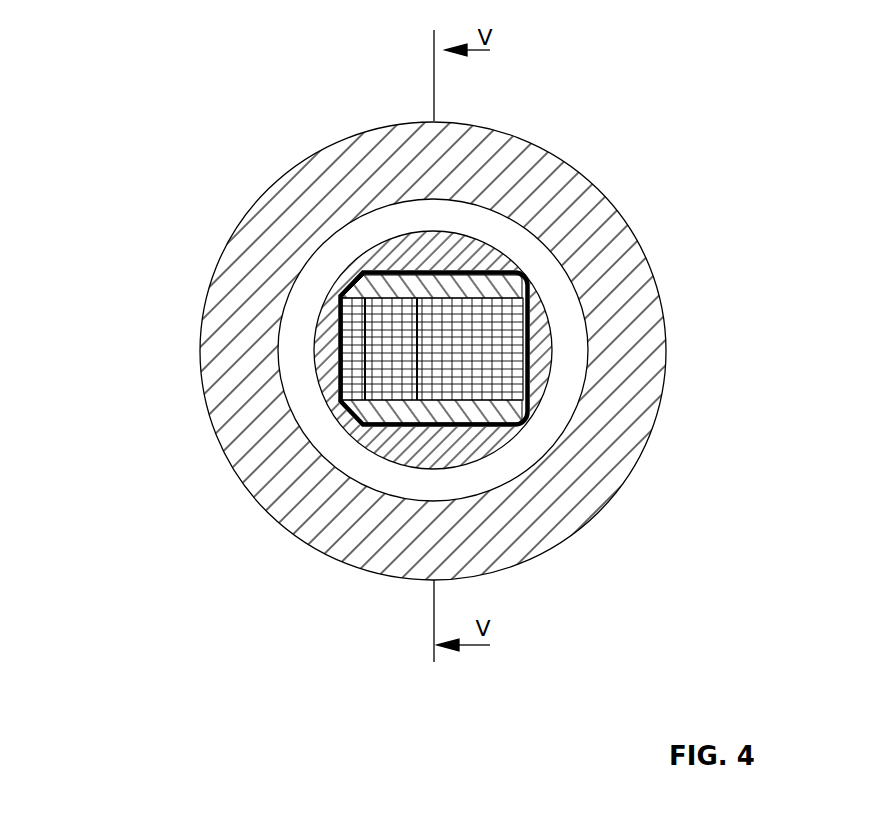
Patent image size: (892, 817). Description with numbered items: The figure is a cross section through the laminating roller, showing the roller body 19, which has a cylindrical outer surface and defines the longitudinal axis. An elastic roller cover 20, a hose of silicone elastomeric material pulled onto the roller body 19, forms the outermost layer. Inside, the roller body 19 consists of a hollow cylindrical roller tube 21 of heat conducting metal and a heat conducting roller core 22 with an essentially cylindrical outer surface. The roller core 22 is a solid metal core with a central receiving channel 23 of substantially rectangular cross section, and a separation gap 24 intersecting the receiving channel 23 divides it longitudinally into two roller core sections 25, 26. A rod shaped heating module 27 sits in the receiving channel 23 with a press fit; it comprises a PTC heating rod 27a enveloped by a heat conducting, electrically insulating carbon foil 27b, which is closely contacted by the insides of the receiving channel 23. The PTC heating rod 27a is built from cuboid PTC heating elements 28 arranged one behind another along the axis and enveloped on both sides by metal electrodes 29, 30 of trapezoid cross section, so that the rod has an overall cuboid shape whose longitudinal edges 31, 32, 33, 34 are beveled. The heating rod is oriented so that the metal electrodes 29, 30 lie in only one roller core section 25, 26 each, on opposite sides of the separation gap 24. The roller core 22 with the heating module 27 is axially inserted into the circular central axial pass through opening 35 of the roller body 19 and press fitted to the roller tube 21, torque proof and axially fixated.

The roller body 19 is at (523, 194).
The roller cover 20 is at (580, 218).
The roller tube 21 is at (338, 447).
The roller core 22 is at (467, 250).
The receiving channel 23 is at (553, 325).
The separation gap 24 is at (535, 357).
The roller core section 25 is at (445, 258).
The roller core section 26 is at (310, 500).
The rod shaped heating module 27 is at (494, 444).
The PTC heating rod 27a is at (472, 293).
The heat conducting electrically insulating foil 27b is at (352, 270).
The PTC heating element 28 is at (435, 352).
The metal electrode 29 is at (337, 296).
The metal electrode 30 is at (405, 407).
The longitudinal edge 31 is at (343, 290).
The longitudinal edge 32 is at (523, 280).
The longitudinal edge 33 is at (530, 420).
The longitudinal edge 34 is at (372, 416).
The central axial pass through opening 35 is at (418, 467).